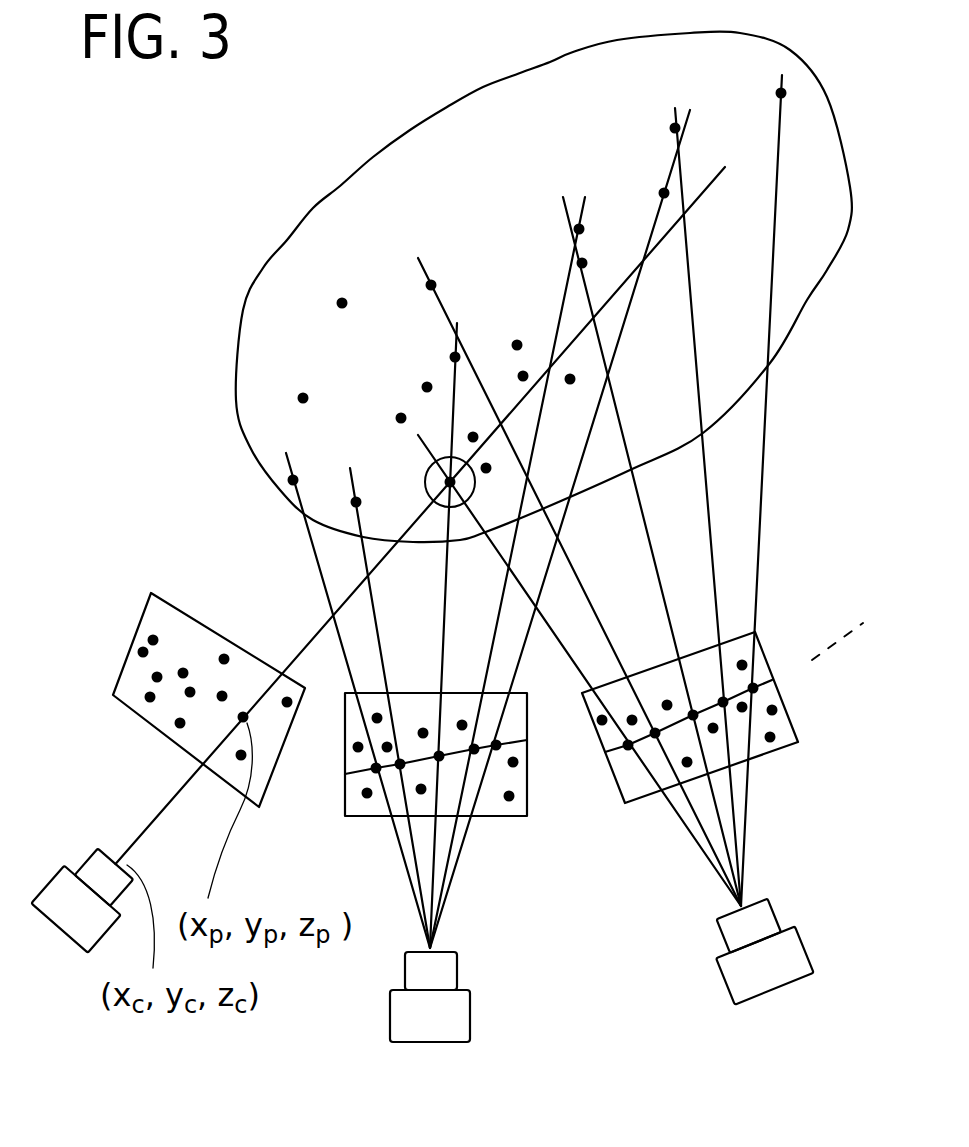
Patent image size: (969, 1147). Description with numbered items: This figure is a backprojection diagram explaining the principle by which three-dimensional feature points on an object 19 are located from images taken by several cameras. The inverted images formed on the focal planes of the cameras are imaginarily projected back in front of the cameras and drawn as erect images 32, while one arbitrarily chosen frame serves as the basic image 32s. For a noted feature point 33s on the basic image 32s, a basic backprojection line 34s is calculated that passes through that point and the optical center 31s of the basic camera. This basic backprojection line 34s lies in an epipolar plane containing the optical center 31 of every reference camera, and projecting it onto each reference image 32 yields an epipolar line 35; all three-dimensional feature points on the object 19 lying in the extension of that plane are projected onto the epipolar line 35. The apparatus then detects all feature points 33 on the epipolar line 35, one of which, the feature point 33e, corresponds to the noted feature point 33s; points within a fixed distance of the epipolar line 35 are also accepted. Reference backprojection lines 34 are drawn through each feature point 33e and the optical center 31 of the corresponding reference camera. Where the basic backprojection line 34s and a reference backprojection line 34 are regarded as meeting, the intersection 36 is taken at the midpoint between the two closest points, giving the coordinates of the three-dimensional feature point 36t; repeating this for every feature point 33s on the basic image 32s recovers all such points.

The object 19 is at (373, 158).
The optical center of reference camera 31 is at (437, 948).
The optical center of basic camera 31s is at (114, 858).
The image 32 is at (378, 818).
The basic image 32s is at (177, 607).
The feature point 33 is at (507, 803).
The noted feature point on basic image 33s is at (226, 652).
The feature point on epipolar line 33e is at (404, 757).
The reference backprojection line 34 is at (563, 307).
The basic backprojection line 34s is at (412, 520).
The epipolar line 35 is at (347, 776).
The intersection 36 is at (643, 260).
The three-dimensional feature point 36t is at (443, 460).